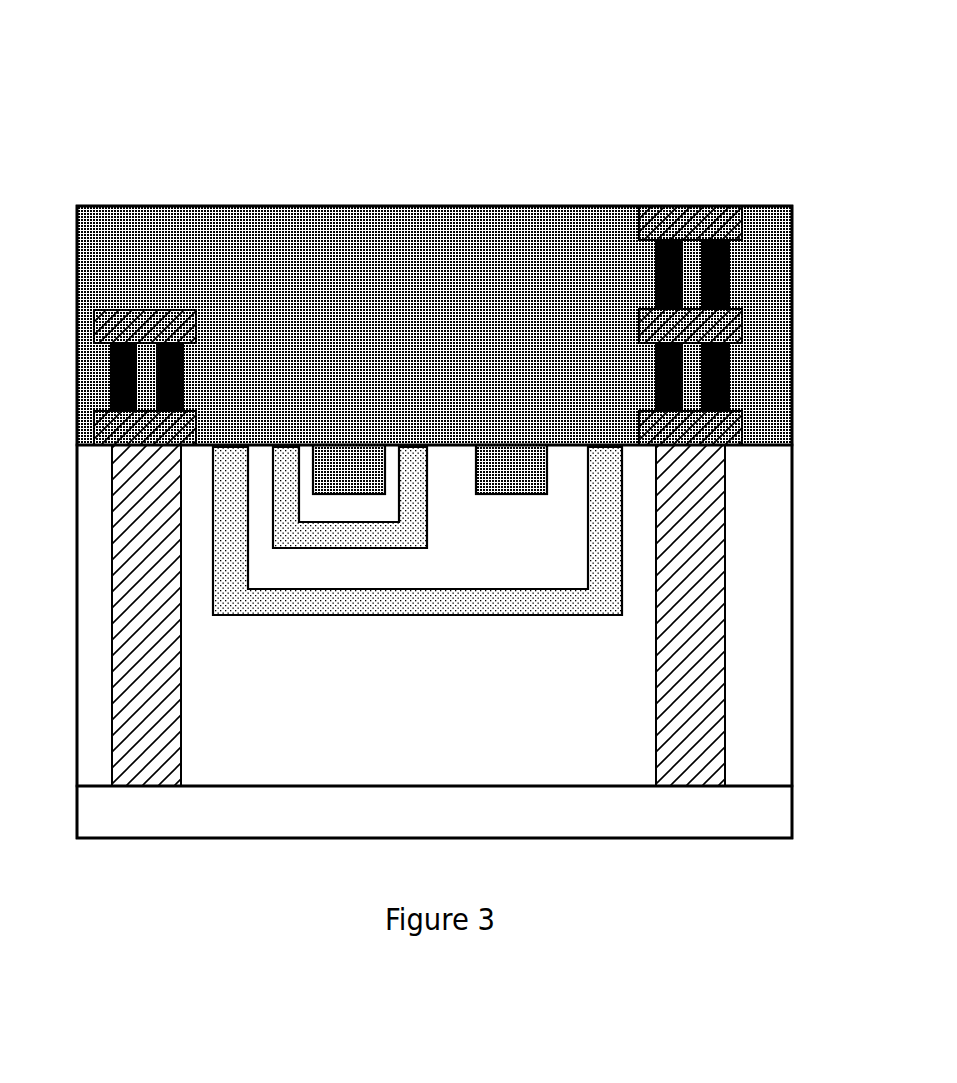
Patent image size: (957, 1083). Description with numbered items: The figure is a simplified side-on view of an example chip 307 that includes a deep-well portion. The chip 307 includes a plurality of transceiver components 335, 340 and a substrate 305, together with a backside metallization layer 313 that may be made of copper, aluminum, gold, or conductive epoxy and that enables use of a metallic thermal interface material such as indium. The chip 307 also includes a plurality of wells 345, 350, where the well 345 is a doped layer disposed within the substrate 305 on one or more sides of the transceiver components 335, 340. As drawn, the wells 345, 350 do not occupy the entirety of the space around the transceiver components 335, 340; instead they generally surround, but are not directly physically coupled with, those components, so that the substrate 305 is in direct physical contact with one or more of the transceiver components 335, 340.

The chip 307 is at (831, 158).
The substrate 305 is at (762, 564).
The backside metallization layer 313 is at (769, 817).
The well 350 is at (267, 593).
The well 345 is at (413, 497).
The transceiver component 340 is at (354, 463).
The transceiver component 335 is at (506, 462).